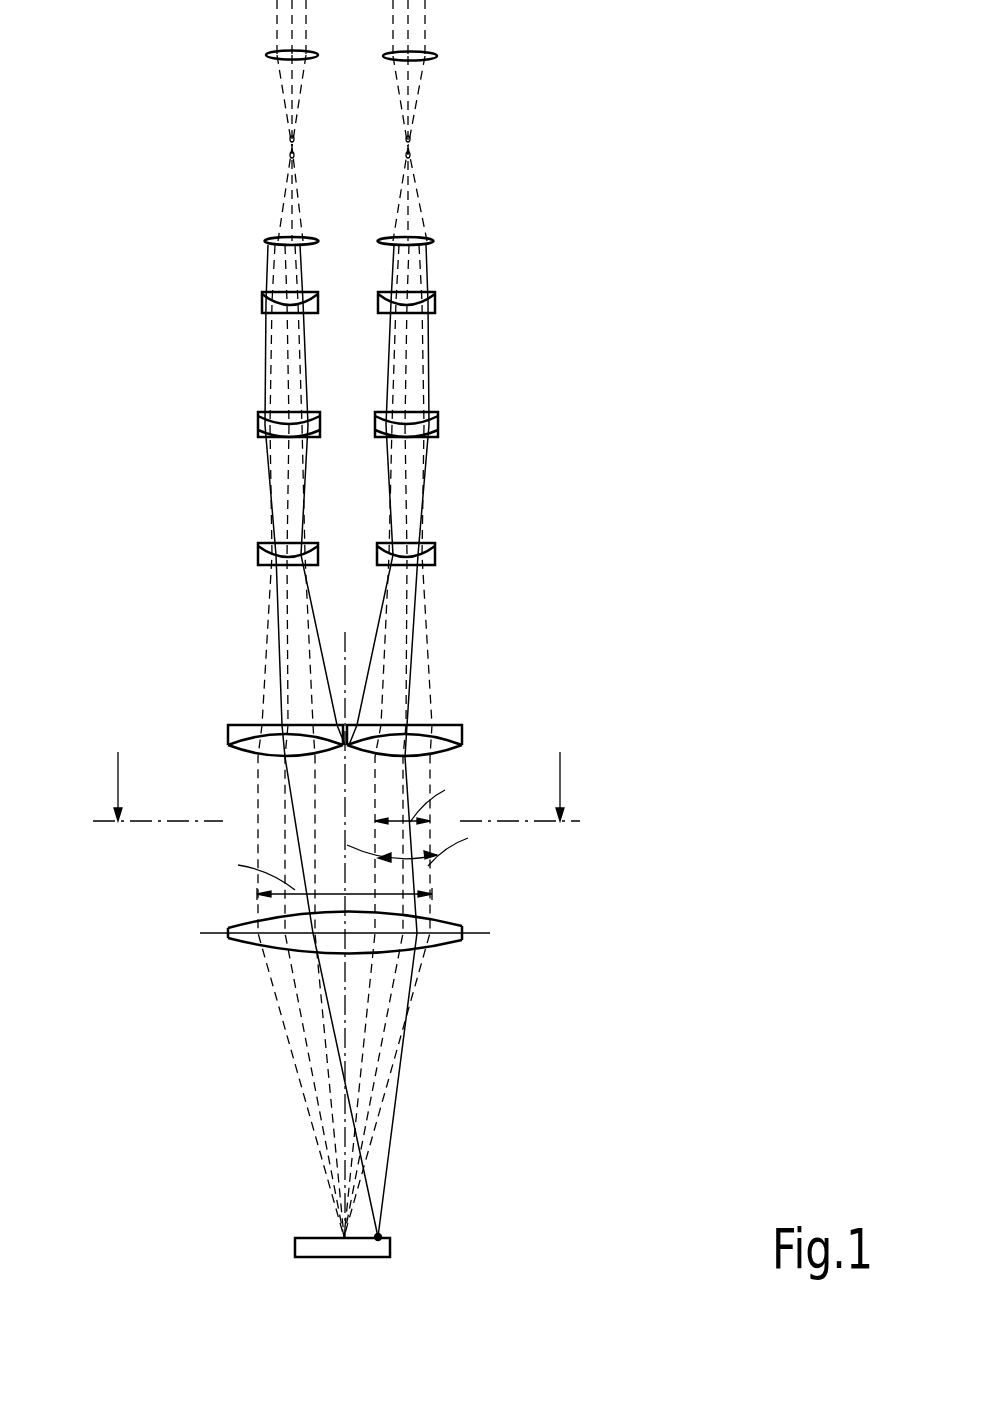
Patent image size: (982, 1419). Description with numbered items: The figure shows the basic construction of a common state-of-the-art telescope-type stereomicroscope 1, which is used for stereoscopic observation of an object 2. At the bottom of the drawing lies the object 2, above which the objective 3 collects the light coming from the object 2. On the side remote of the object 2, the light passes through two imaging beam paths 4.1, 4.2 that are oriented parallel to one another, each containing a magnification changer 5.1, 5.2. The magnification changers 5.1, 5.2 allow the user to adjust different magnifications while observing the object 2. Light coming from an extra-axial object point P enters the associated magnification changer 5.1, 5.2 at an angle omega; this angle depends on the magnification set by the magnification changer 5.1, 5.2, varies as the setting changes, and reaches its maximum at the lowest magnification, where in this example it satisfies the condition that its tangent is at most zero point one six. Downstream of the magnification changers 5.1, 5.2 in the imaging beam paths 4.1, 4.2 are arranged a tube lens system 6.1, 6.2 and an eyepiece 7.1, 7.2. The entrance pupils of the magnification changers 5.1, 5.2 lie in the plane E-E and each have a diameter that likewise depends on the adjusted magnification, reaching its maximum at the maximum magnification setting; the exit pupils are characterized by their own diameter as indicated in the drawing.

The stereomicroscope 1 is at (661, 1267).
The object 2 is at (316, 1236).
The objective 3 is at (242, 944).
The imaging beam path 4.1 is at (423, 767).
The imaging beam path 4.2 is at (265, 767).
The magnification changer 5.1 is at (525, 284).
The magnification changer 5.2 is at (157, 284).
The tube lens system 6.1 is at (433, 240).
The tube lens system 6.2 is at (265, 239).
The eyepiece 7.1 is at (437, 57).
The eyepiece 7.2 is at (266, 56).